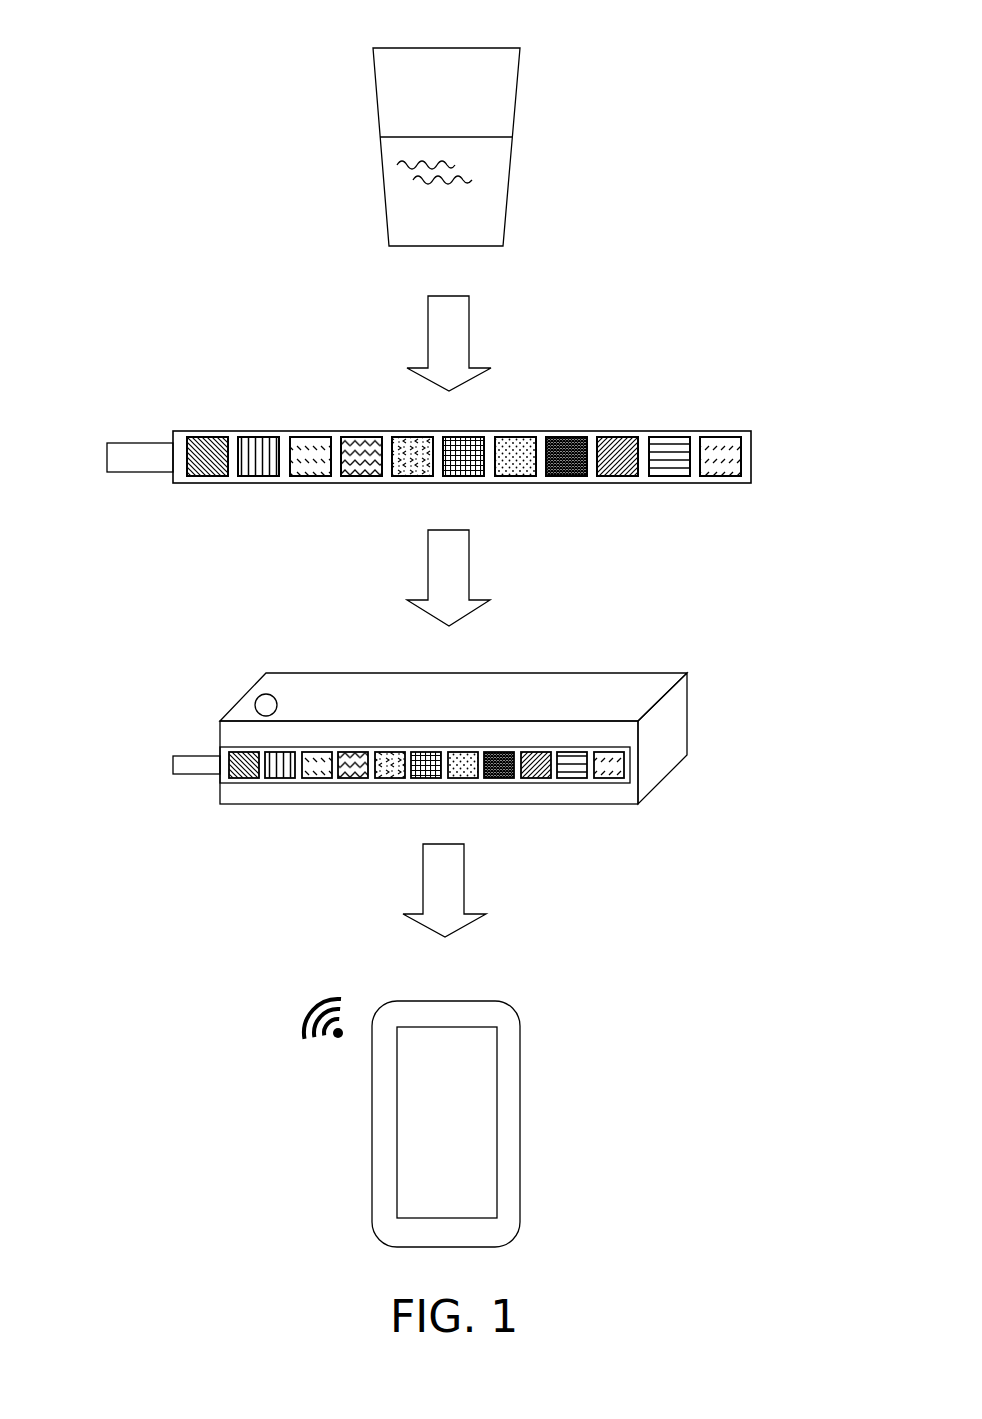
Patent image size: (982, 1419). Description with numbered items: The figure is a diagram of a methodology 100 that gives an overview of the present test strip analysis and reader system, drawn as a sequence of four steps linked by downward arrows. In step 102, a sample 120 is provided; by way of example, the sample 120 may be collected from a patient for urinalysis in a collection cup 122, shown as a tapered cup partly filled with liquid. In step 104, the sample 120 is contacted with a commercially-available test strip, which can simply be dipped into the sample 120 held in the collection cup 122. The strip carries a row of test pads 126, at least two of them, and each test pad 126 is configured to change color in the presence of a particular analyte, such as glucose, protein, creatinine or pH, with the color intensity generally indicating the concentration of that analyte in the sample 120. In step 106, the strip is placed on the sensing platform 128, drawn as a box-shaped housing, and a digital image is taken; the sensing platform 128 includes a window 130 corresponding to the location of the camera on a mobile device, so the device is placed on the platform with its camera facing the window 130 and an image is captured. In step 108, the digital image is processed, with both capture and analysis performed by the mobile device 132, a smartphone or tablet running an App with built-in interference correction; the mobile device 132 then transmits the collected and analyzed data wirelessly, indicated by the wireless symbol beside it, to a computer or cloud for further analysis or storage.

The methodology 100 is at (669, 23).
The step 102 is at (393, 129).
The step 104 is at (442, 389).
The step 106 is at (402, 695).
The step 108 is at (366, 1097).
The sample 120 is at (497, 195).
The collection cup 122 is at (515, 102).
The test pad 126 is at (618, 442).
The sensing platform 128 is at (677, 730).
The window 130 is at (257, 702).
The mobile device 132 is at (520, 1202).